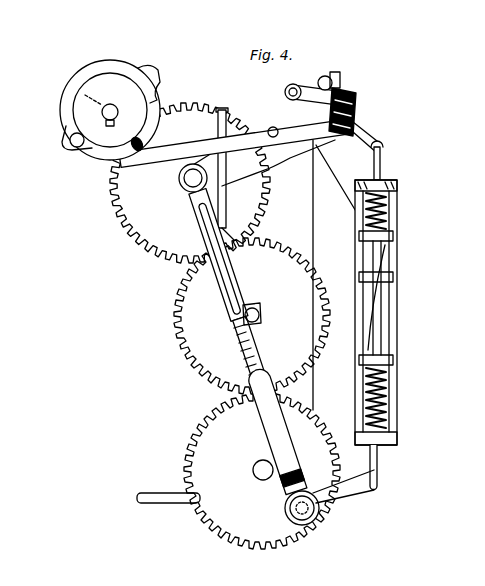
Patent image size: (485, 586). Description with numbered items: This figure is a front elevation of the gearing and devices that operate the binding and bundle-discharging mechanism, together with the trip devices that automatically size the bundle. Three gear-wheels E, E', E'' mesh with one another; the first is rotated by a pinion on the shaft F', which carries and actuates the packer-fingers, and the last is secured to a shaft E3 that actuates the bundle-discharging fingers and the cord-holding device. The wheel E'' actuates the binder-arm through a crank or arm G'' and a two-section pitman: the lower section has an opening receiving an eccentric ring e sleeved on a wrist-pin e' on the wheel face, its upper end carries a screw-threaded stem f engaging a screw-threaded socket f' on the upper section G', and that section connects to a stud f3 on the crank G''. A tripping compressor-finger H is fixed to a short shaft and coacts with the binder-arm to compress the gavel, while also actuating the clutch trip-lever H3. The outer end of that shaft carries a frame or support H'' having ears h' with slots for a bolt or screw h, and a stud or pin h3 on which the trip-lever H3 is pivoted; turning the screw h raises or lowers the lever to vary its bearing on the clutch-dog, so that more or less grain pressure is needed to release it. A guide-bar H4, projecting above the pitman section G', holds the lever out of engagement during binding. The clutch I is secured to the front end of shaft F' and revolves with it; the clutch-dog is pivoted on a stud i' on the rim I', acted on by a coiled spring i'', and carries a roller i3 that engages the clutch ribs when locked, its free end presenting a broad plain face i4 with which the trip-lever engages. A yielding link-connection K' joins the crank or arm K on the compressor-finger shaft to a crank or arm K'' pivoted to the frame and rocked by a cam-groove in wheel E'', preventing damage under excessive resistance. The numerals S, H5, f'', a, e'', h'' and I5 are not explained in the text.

The gear-wheel E is at (190, 183).
The gear-wheel E' is at (252, 316).
The gear-wheel E'' is at (262, 471).
The shaft E3 is at (263, 466).
The vertical rod S is at (313, 208).
The tripping compressor-finger H is at (338, 181).
The guide-bar H4 is at (224, 110).
The link H5 is at (240, 180).
The crank or arm G'' is at (278, 163).
The screw-threaded stem f is at (234, 279).
The rod hatched section f'' is at (239, 319).
The lower rod section a is at (278, 431).
The stud f3 is at (188, 175).
The screw-threaded socket f' is at (261, 320).
The pitman section G' is at (255, 291).
The wrist-pin e' is at (290, 512).
The crank e'' is at (264, 495).
The eccentric ring e is at (320, 489).
The clutch trip-lever H3 is at (262, 112).
The stud or pin h3 is at (280, 150).
The roller h'' is at (304, 79).
The bolt or screw h is at (336, 71).
The frame or support H'' is at (355, 112).
The ears h' is at (377, 112).
The crank or arm K is at (393, 149).
The yielding link-connection K' is at (385, 312).
The crank or arm K'' is at (345, 489).
The rim I' is at (110, 99).
The shaft F' is at (97, 108).
The clutch I is at (101, 104).
The broad plain face i4 is at (149, 78).
The ratchet teeth I5 is at (164, 104).
The roller i3 is at (146, 140).
The stud i' is at (76, 150).
The coiled spring i'' is at (51, 133).